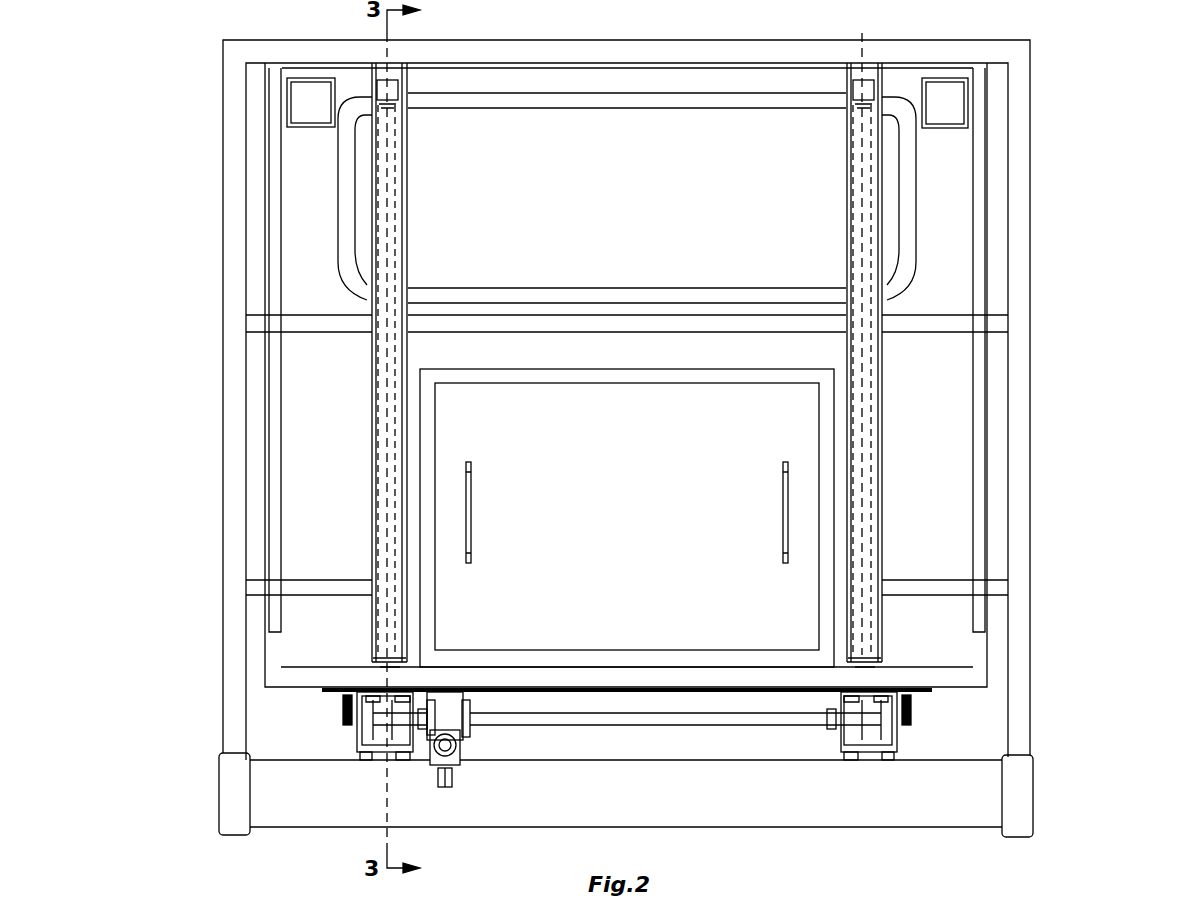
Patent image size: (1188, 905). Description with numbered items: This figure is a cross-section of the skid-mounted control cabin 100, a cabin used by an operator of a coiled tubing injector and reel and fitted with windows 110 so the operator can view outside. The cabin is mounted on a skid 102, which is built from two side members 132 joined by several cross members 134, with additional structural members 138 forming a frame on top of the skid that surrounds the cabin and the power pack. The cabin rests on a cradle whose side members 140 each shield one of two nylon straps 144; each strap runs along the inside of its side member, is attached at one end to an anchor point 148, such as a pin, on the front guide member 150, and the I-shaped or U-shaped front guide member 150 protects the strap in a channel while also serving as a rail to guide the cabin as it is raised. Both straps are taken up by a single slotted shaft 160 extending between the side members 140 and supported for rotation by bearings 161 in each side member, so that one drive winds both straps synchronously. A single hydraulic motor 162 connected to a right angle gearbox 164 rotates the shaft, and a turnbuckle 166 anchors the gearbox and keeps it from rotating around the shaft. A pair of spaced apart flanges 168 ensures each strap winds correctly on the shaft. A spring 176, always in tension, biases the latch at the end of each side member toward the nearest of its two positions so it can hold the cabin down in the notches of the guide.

The control cabin 100 is at (965, 212).
The skid 102 is at (1072, 762).
The windows 110 is at (617, 128).
The side members 132 is at (222, 808).
The cross members 134 is at (770, 827).
The structural members 138 is at (223, 243).
The side members 140 is at (357, 740).
The straps 144 is at (370, 398).
The anchor point 148 is at (398, 87).
The front guide member 150 is at (368, 463).
The shaft 160 is at (614, 724).
The bearings 161 is at (402, 690).
The hydraulic motor 162 is at (460, 752).
The right angle gearbox 164 is at (466, 740).
The turnbuckle 166 is at (455, 782).
The flanges 168 is at (366, 698).
The spring 176 is at (343, 708).